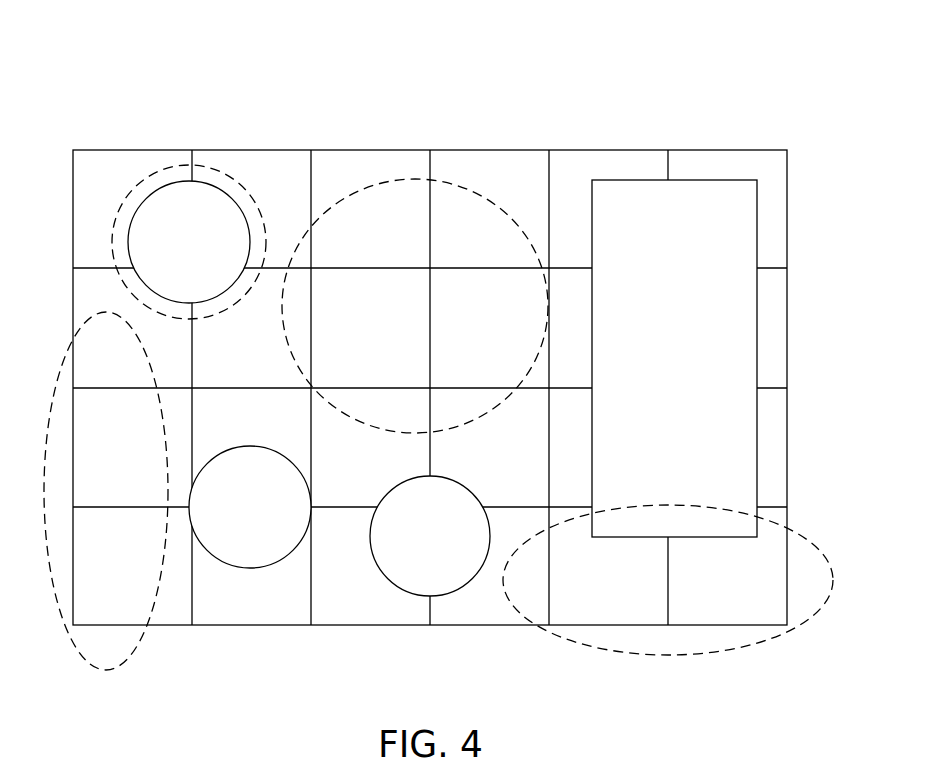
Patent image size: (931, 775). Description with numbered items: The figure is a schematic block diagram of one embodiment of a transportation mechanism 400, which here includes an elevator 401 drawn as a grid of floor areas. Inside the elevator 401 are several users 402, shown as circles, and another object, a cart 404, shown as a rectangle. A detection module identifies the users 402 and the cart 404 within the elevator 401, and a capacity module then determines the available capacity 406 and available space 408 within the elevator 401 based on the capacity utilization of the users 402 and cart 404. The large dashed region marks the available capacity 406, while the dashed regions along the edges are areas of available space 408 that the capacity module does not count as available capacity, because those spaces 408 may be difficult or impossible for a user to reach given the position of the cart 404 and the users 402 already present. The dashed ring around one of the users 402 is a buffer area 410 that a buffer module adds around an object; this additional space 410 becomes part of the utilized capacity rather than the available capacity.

The transportation mechanism 400 is at (140, 91).
The elevator 401 is at (75, 149).
The users 402 is at (171, 252).
The cart 404 is at (657, 368).
The available capacity 406 is at (458, 186).
The available space 408 is at (547, 631).
The buffer area 410 is at (213, 168).